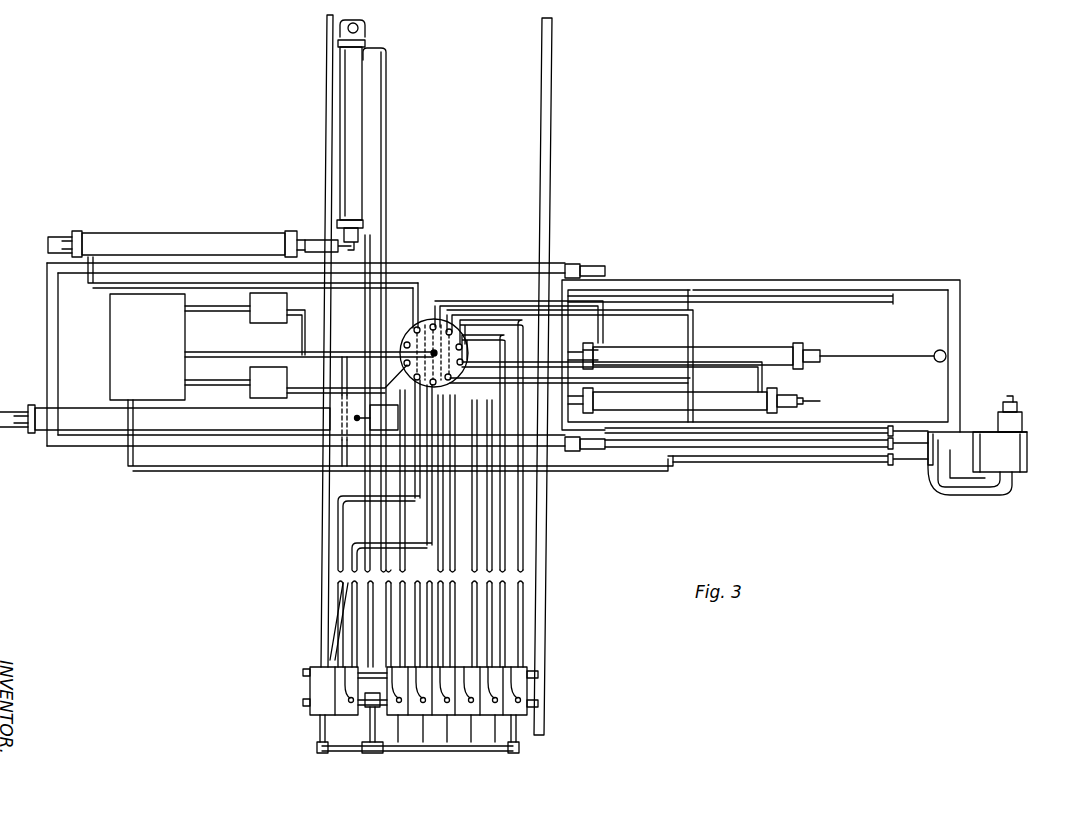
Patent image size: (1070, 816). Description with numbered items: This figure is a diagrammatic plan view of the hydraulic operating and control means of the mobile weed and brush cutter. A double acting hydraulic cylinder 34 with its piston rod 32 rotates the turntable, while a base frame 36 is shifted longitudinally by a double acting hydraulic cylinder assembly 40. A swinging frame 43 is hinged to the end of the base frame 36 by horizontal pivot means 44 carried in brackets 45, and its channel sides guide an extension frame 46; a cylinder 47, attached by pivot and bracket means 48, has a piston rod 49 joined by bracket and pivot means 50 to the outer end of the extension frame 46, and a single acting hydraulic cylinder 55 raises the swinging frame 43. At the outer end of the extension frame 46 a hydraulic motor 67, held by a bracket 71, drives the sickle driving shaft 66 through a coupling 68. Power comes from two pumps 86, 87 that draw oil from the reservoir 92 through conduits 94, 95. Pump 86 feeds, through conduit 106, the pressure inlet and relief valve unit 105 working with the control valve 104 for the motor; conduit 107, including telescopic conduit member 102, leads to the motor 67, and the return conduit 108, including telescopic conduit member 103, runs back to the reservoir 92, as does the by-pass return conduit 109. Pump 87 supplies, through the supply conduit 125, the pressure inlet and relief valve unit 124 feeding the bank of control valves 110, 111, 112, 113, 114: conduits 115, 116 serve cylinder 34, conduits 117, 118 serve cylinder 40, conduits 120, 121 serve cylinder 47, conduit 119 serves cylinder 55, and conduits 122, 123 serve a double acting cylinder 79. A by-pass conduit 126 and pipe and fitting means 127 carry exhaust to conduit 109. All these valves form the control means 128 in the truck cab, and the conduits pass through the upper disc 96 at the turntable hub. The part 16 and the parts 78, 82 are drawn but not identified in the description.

The mast 16 is at (547, 128).
The piston rod 32 is at (336, 242).
The hydraulic cylinder 34 is at (356, 103).
The base frame 36 is at (47, 340).
The double acting hydraulic cylinder assembly 40 is at (152, 242).
The swinging frame 43 is at (630, 283).
The horizontal pivot means 44 is at (588, 265).
The brackets 45 is at (572, 264).
The extension frame 46 is at (905, 284).
The cylinder 47 is at (722, 346).
The pivot and bracket means 48 is at (586, 344).
The piston rod 49 is at (830, 352).
The bracket and pivot means 50 is at (938, 350).
The hydraulic cylinder 55 is at (73, 410).
The sickle driving shaft 66 is at (1018, 406).
The hydraulic motor 67 is at (1008, 464).
The coupling 68 is at (1024, 418).
The bracket 71 is at (930, 468).
The conduit 78 is at (810, 400).
The double acting cylinder 79 is at (745, 412).
The hydraulic cylinder 82 is at (594, 400).
The hydraulic pump 86 is at (268, 308).
The hydraulic pump 87 is at (268, 382).
The reservoir 92 is at (147, 347).
The conduit 94 is at (221, 311).
The conduit 95 is at (193, 382).
The upper disc 96 is at (422, 320).
The telescopic conduit member 102 is at (830, 452).
The telescopic conduit member 103 is at (862, 468).
The control valve 104 is at (345, 715).
The pressure inlet and relief valve unit 105 is at (310, 686).
The conduit 106 is at (347, 362).
The conduit 107 is at (352, 580).
The return or exhaust conduit 108 is at (180, 474).
The by-pass return conduit 109 is at (231, 357).
The control valve 110 is at (423, 745).
The control valve 111 is at (398, 745).
The control valve 112 is at (447, 745).
The control valve 113 is at (472, 745).
The control valve 114 is at (497, 745).
The conduit 115 is at (372, 232).
The conduit 116 is at (388, 193).
The conduit 117 is at (93, 290).
The conduit 118 is at (420, 318).
The conduit 119 is at (358, 428).
The conduit 120 is at (458, 301).
The conduit 121 is at (600, 318).
The conduit 122 is at (490, 416).
The conduit 123 is at (478, 343).
The pressure inlet and relief valve unit 124 is at (530, 686).
The fluid pressure supply conduit 125 is at (314, 395).
The by-pass conduit 126 is at (442, 752).
The pipe and fitting means 127 is at (379, 712).
The control means 128 is at (292, 715).